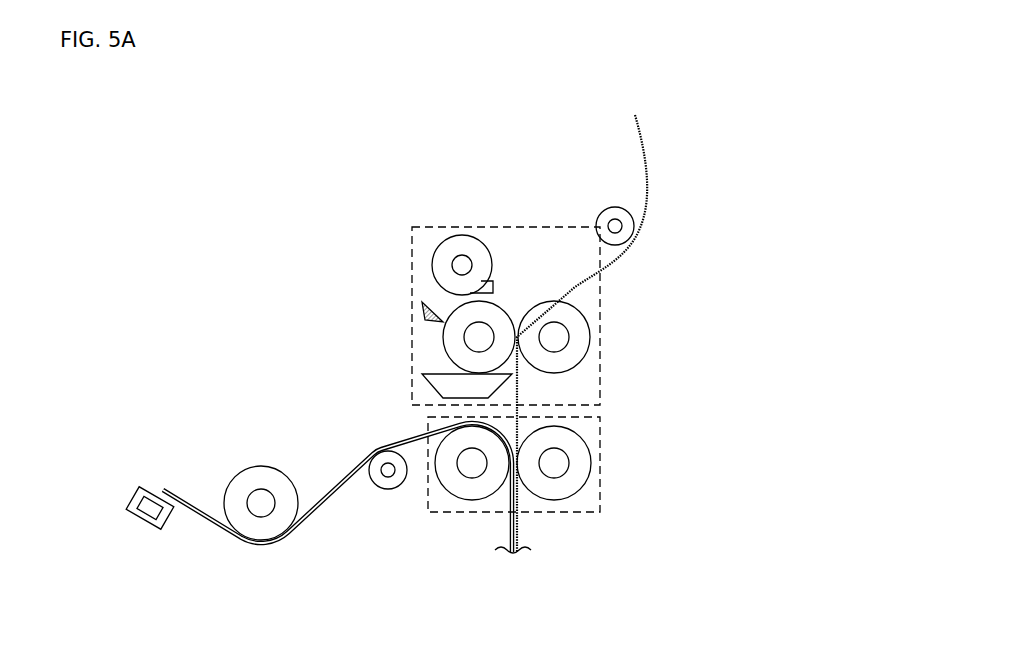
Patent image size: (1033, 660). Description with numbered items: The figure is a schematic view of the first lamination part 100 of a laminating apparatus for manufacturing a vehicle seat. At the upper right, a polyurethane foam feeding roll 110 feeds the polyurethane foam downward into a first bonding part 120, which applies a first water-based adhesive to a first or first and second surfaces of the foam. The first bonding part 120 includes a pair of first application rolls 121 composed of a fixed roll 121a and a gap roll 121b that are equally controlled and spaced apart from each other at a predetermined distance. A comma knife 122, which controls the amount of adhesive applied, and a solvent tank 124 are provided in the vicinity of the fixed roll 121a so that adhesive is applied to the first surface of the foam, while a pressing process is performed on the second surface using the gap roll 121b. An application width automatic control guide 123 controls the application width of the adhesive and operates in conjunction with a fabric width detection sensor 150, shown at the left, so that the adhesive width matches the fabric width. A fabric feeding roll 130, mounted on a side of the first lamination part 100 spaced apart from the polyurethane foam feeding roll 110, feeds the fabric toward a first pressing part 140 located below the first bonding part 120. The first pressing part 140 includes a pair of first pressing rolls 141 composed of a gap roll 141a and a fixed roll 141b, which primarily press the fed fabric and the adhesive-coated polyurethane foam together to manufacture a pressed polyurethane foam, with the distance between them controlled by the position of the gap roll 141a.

The first lamination part 100 is at (252, 147).
The polyurethane foam feeding roll 110 is at (612, 208).
The first bonding part 120 is at (625, 279).
The pair of first application rolls 121 is at (589, 333).
The fixed roll 121a is at (497, 353).
The gap roll 121b is at (582, 337).
The comma knife 122 is at (462, 243).
The application width automatic control guide 123 is at (418, 311).
The solvent tank 124 is at (430, 388).
The fabric feeding roll 130 is at (262, 463).
The first pressing part 140 is at (592, 528).
The pair of first pressing rolls 141 is at (585, 459).
The gap roll 141a is at (490, 480).
The fixed roll 141b is at (582, 463).
The fabric width detection sensor 150 is at (128, 498).